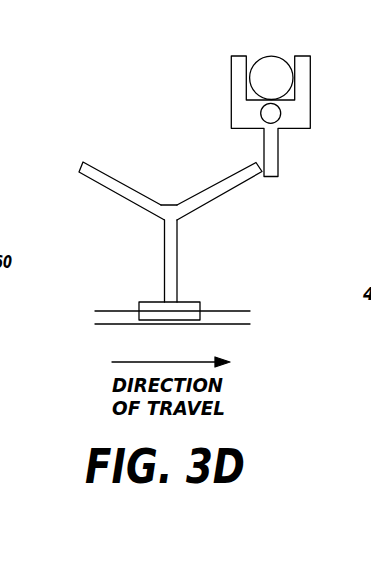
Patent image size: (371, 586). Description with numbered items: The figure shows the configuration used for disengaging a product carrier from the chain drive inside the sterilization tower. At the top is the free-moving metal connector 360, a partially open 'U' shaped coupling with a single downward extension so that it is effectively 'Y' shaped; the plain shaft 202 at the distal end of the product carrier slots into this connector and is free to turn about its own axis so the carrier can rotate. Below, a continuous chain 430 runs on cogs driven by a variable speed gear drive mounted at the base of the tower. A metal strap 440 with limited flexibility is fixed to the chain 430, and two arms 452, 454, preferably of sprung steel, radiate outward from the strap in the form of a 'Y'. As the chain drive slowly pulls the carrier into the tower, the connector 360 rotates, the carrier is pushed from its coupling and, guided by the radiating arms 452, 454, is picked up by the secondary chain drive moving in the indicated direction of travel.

The plain shaft 202 is at (274, 56).
The free-moving metal connector 360 is at (308, 97).
The arm 452 is at (93, 184).
The arm 454 is at (229, 187).
The metal strap 440 is at (163, 302).
The continuous chain 430 is at (227, 325).